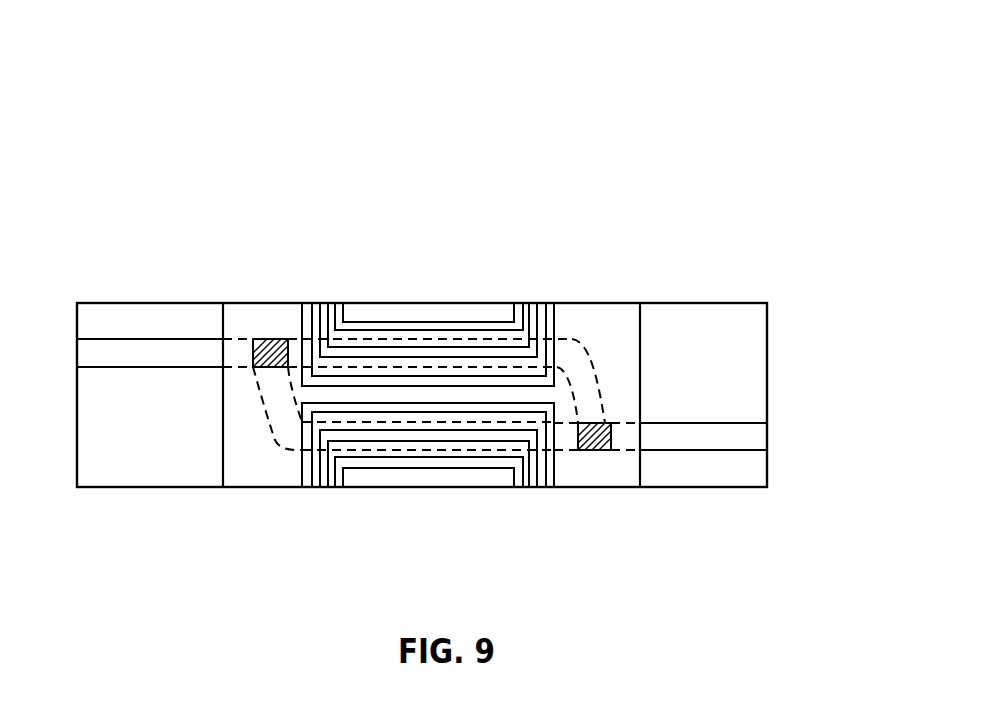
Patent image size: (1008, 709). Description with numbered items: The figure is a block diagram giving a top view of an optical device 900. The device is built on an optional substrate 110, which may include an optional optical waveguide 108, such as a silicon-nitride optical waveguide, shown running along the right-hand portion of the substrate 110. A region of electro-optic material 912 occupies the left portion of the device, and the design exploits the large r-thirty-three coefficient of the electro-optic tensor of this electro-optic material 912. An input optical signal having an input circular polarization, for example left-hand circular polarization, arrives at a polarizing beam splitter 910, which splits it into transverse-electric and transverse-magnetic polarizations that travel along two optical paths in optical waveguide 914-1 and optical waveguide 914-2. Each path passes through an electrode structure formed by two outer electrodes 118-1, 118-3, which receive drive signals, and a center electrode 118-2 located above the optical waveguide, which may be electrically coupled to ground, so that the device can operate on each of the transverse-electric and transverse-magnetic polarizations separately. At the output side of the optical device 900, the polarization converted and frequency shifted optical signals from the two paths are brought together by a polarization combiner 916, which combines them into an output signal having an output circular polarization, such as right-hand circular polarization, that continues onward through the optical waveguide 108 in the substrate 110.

The optical device 900 is at (202, 82).
The electro-optic material 912 is at (240, 322).
The polarizing beam splitter 910 is at (273, 340).
The optical waveguide 914-1 is at (567, 355).
The optical waveguide 914-2 is at (280, 405).
The polarization combiner 916 is at (605, 423).
The outer electrode 118-1 is at (475, 411).
The center electrode 118-2 is at (368, 442).
The outer electrode 118-3 is at (422, 458).
The optical waveguide 108 is at (693, 437).
The substrate 110 is at (730, 473).